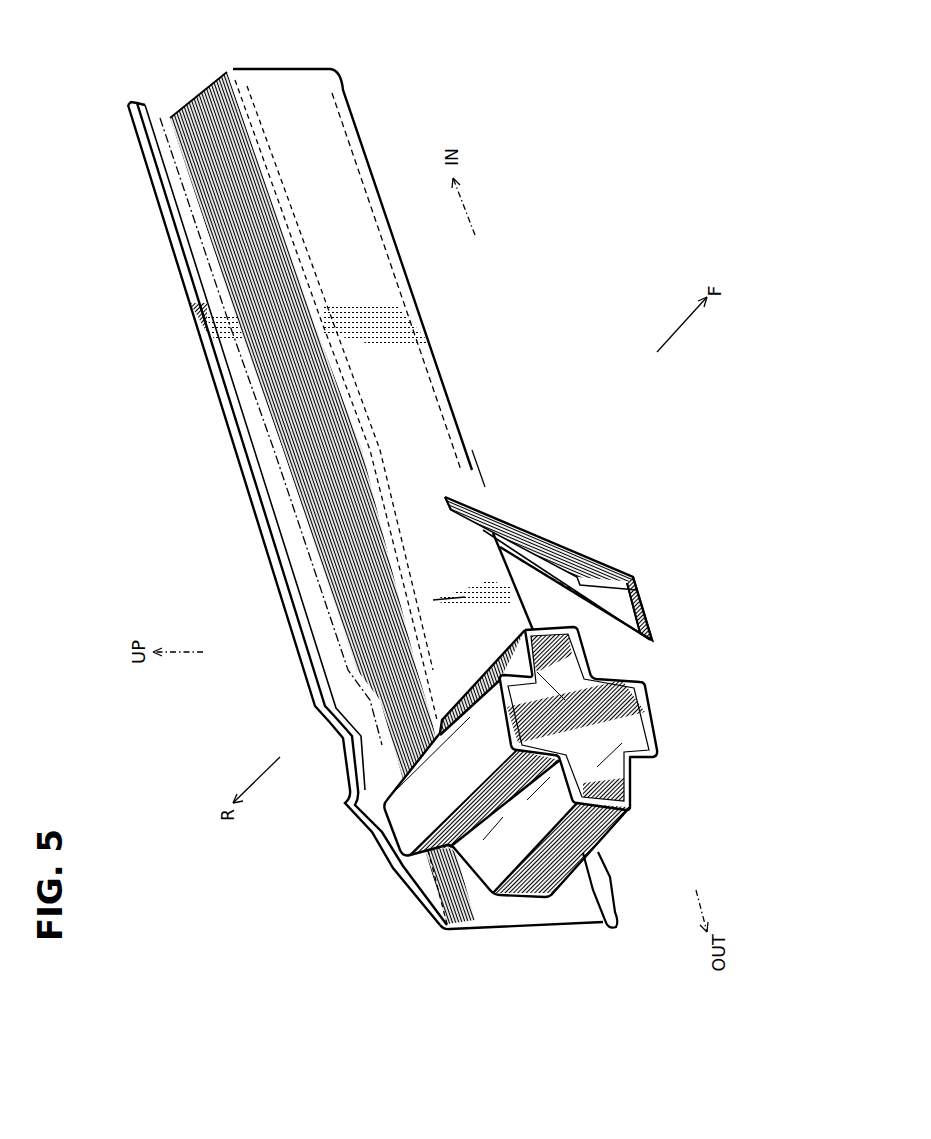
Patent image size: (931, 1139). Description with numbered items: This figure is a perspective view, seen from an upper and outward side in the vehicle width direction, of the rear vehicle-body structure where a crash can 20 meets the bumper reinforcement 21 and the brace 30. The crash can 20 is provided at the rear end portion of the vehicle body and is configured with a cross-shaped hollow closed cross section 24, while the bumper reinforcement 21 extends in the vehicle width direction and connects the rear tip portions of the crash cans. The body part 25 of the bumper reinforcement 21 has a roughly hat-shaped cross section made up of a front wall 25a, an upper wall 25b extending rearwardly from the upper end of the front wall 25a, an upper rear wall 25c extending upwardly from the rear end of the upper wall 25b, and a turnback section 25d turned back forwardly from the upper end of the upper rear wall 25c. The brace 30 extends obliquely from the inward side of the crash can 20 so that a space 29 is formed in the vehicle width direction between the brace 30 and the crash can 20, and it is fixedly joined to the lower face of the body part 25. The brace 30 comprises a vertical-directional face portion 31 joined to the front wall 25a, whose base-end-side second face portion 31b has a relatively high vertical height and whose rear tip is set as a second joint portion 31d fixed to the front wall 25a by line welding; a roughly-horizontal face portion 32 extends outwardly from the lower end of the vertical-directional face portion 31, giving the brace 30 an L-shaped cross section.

The crash can 20 is at (617, 823).
The bumper reinforcement 21 is at (205, 386).
The cross-shaped hollow closed cross section 24 is at (622, 732).
The body part 25 is at (274, 64).
The front wall 25a is at (340, 135).
The upper wall 25b is at (197, 122).
The upper rear wall 25c is at (183, 206).
The turnback section 25d is at (140, 153).
The space 29 is at (557, 607).
The brace 30 is at (583, 547).
The vertical-directional face portion 31 is at (473, 515).
The second face portion 31b is at (541, 528).
The second joint portion 31d is at (455, 493).
The roughly-horizontal face portion 32 is at (652, 607).